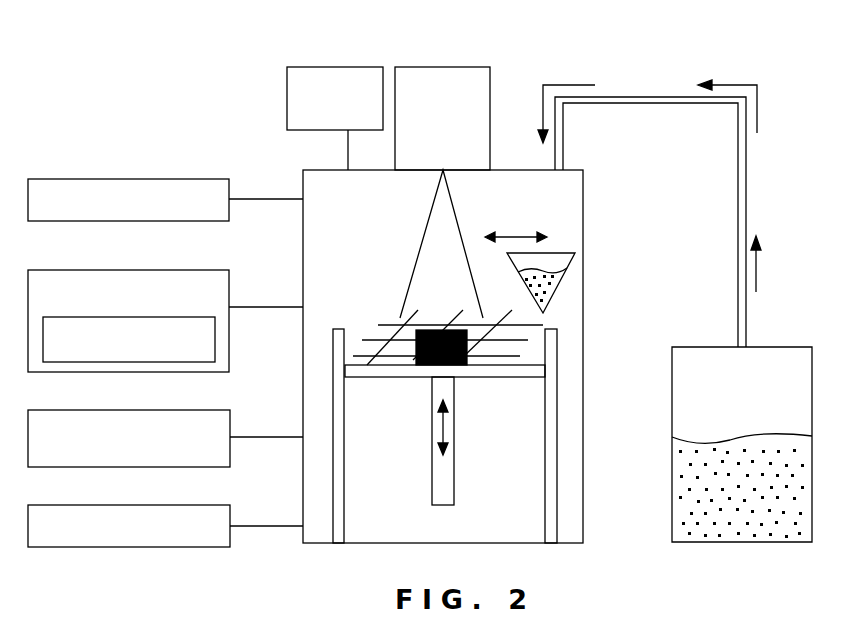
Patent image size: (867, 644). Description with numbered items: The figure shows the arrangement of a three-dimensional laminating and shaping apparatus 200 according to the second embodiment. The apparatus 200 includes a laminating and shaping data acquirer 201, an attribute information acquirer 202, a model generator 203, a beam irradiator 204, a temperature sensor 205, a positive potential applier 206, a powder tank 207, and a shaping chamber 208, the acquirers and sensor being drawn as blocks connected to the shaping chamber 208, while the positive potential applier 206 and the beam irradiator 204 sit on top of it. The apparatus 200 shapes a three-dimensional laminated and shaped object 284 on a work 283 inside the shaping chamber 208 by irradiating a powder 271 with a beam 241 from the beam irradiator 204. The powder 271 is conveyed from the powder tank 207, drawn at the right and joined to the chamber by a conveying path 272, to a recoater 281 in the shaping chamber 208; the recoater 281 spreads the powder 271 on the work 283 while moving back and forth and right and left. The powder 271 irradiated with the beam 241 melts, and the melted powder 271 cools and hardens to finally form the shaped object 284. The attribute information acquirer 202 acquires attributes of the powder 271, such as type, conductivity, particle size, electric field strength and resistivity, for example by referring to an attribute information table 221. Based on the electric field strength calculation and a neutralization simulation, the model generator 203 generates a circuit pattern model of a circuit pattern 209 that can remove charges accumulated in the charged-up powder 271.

The three-dimensional laminating and shaping apparatus 200 is at (212, 67).
The laminating and shaping data acquirer 201 is at (130, 410).
The attribute information acquirer 202 is at (130, 270).
The model generator 203 is at (130, 179).
The beam irradiator 204 is at (445, 65).
The temperature sensor 205 is at (130, 505).
The positive potential applier 206 is at (348, 65).
The powder tank 207 is at (700, 347).
The shaping chamber 208 is at (583, 200).
The circuit pattern 209 is at (383, 325).
The attribute information table 221 is at (216, 337).
The beam 241 is at (424, 235).
The powder 271 is at (560, 290).
The powder supply pipe 272 is at (748, 184).
The recoater 281 is at (570, 262).
The work 283 is at (378, 367).
The three-dimensional laminated and shaped object 284 is at (455, 366).